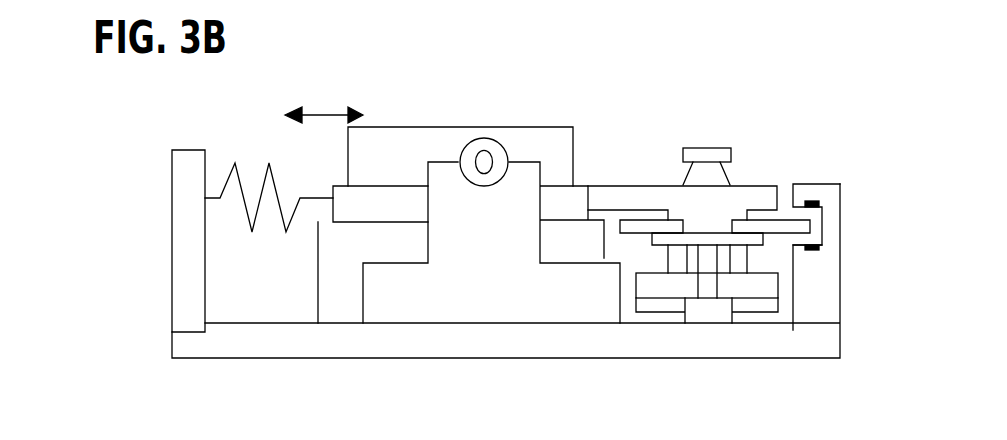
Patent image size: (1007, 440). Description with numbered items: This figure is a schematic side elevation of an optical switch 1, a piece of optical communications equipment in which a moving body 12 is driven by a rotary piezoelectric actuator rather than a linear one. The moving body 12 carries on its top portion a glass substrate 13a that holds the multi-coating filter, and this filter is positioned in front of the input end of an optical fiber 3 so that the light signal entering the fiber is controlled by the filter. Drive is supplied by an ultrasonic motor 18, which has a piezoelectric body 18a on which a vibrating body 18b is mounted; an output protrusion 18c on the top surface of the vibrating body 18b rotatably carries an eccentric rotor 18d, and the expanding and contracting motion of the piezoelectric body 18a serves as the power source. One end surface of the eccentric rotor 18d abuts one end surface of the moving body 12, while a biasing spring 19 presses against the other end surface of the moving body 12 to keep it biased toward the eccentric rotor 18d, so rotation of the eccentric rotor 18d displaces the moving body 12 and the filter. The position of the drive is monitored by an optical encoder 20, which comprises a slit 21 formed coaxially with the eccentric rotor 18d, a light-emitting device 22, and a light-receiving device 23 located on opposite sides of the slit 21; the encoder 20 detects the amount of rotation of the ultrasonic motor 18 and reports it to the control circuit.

The optical switch 1 is at (327, 45).
The optical fiber for inputting 3 is at (486, 158).
The moving body 12 is at (339, 208).
The glass substrate 13a is at (393, 136).
The ultrasonic motor 18 is at (692, 109).
The piezoelectric body 18a is at (668, 307).
The vibrating body 18b is at (645, 287).
The output protrusion 18c is at (738, 263).
The eccentric rotor 18d is at (637, 194).
The biasing spring 19 is at (240, 160).
The optical encoder 20 is at (826, 118).
The slit 21 is at (767, 225).
The light-emitting device 22 is at (807, 202).
The light-receiving device 23 is at (815, 258).